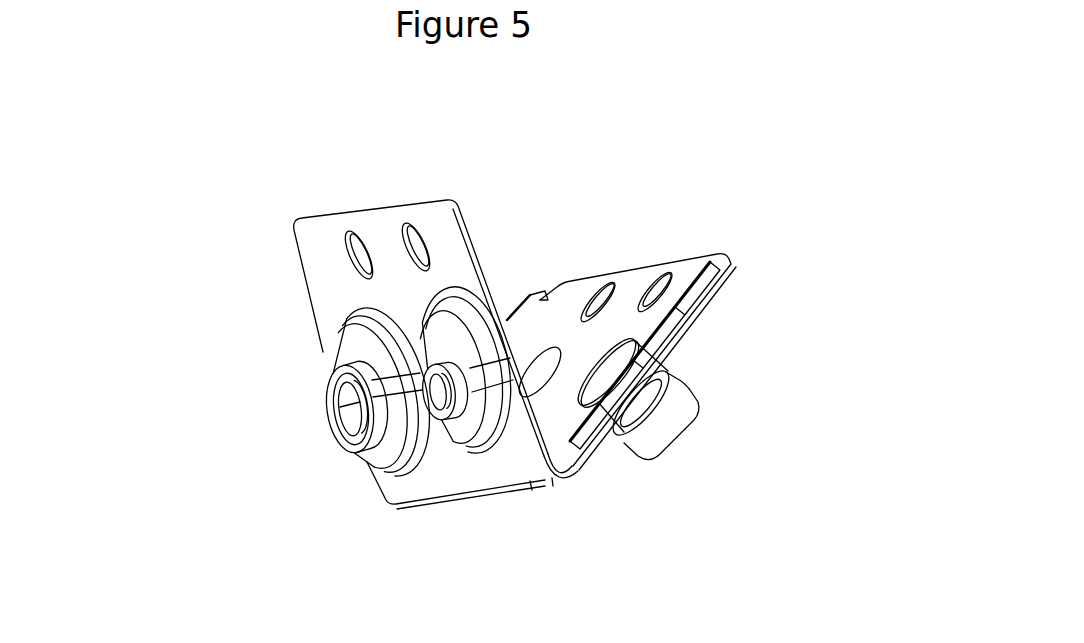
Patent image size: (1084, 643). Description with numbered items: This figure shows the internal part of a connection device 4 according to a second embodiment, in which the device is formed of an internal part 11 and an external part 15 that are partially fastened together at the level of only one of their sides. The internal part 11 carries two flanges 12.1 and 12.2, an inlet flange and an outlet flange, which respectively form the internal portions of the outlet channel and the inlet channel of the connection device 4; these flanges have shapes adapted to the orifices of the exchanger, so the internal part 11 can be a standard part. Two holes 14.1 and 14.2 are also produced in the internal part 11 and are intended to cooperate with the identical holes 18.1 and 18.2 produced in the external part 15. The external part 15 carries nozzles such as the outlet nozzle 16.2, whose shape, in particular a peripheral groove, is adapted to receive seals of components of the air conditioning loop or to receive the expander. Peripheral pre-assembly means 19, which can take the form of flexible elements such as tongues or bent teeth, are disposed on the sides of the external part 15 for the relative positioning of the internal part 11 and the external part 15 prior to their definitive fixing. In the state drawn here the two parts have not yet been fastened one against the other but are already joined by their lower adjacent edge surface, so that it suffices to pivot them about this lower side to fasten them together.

The connection device 4 is at (651, 510).
The internal part 11 is at (338, 491).
The inlet flange 12.1 is at (345, 373).
The outlet flange 12.2 is at (427, 360).
The hole 14.1 is at (355, 242).
The hole 14.2 is at (413, 242).
The external part 15 is at (727, 237).
The outlet nozzle 16.2 is at (653, 407).
The hole 18.1 is at (590, 303).
The hole 18.2 is at (653, 293).
The peripheral pre-assembly means 19 is at (705, 288).